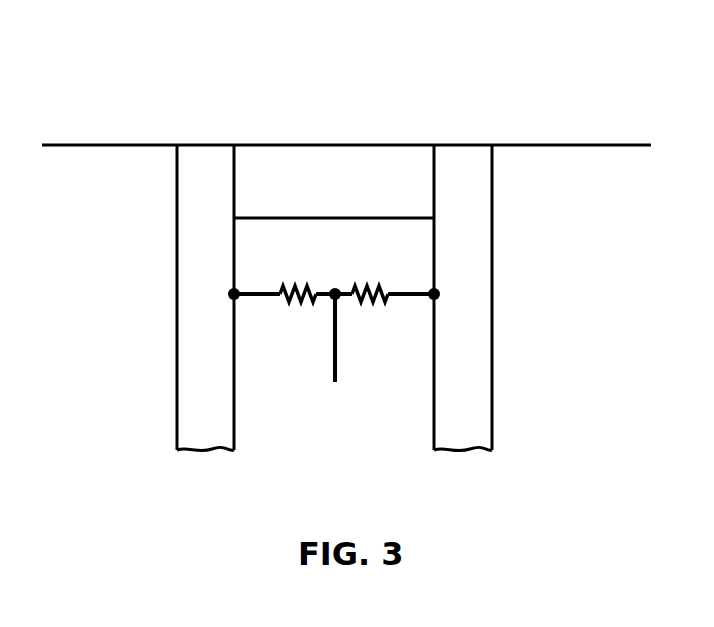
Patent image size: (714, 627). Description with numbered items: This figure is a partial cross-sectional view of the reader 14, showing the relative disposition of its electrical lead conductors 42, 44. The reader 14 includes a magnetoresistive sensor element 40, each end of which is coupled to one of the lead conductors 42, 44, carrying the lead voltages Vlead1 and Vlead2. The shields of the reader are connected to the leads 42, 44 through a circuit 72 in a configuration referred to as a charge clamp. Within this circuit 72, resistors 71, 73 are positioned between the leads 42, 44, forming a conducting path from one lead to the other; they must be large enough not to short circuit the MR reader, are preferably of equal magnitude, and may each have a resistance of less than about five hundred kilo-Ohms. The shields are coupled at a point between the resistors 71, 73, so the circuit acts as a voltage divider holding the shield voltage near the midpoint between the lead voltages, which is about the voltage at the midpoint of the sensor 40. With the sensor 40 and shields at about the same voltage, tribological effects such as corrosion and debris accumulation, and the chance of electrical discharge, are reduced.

The reader 14 is at (104, 94).
The magnetoresistive sensor element 40 is at (313, 144).
The electrical lead conductor 42 is at (177, 270).
The electrical lead conductor 44 is at (492, 272).
The resistor 71 is at (293, 283).
The circuit 72 is at (337, 336).
The resistor 73 is at (370, 283).